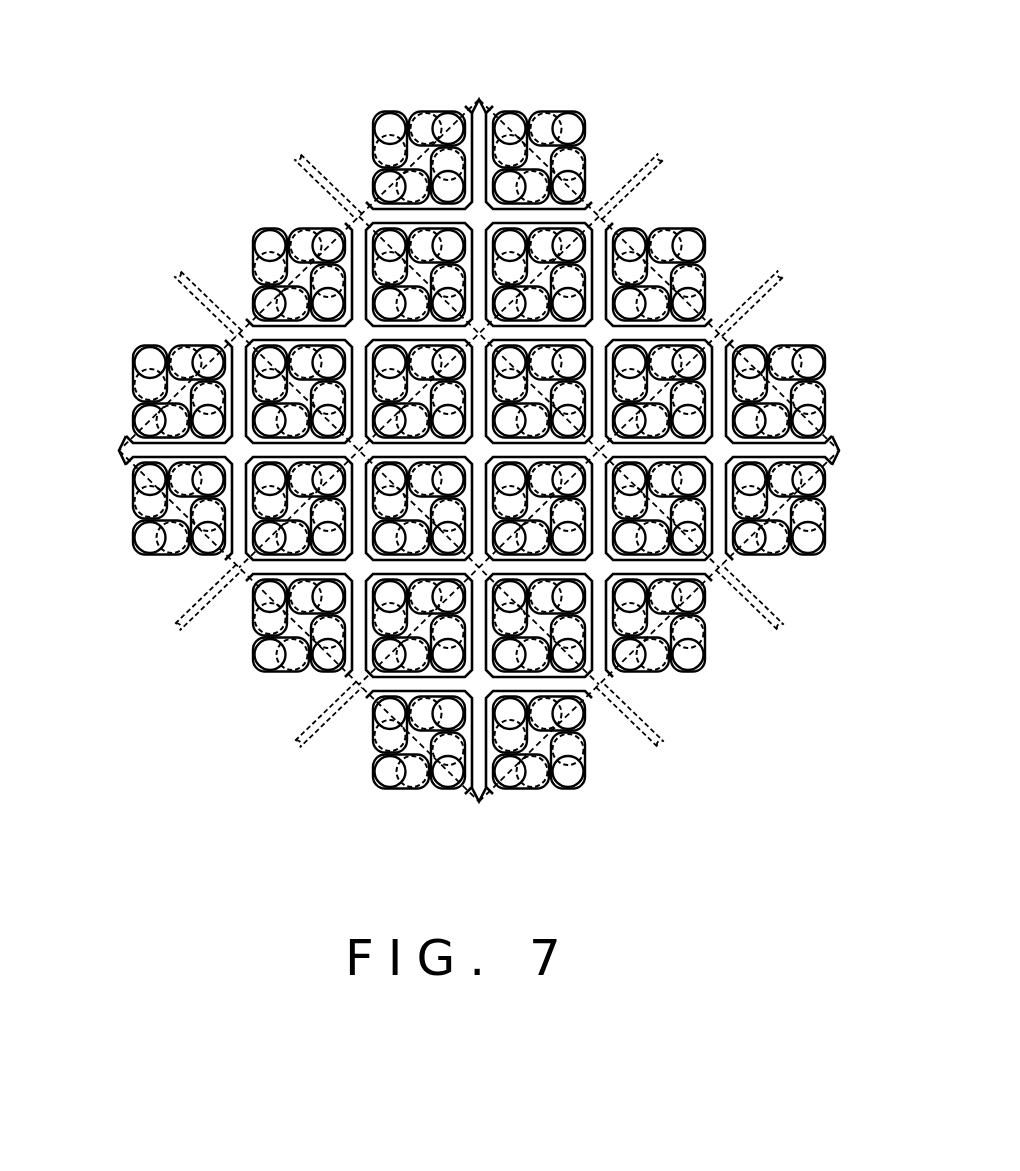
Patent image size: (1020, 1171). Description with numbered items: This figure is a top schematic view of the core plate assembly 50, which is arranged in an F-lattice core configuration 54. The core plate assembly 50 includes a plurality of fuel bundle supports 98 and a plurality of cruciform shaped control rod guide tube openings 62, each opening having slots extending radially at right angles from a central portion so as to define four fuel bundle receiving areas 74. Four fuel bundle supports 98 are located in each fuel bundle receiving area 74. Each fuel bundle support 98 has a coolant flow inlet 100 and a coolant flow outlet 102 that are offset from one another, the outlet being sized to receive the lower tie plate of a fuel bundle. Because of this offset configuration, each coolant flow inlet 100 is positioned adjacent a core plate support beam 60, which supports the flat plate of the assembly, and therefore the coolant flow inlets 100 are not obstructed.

The core plate assembly 50 is at (750, 100).
The F-lattice core configuration 54 is at (150, 310).
The support beam 60 is at (300, 186).
The control rod guide tube opening 62 is at (482, 107).
The fuel bundle receiving area 74 is at (560, 260).
The fuel bundle support 98 is at (552, 118).
The coolant flow inlet 100 is at (392, 150).
The coolant flow outlet 102 is at (393, 128).